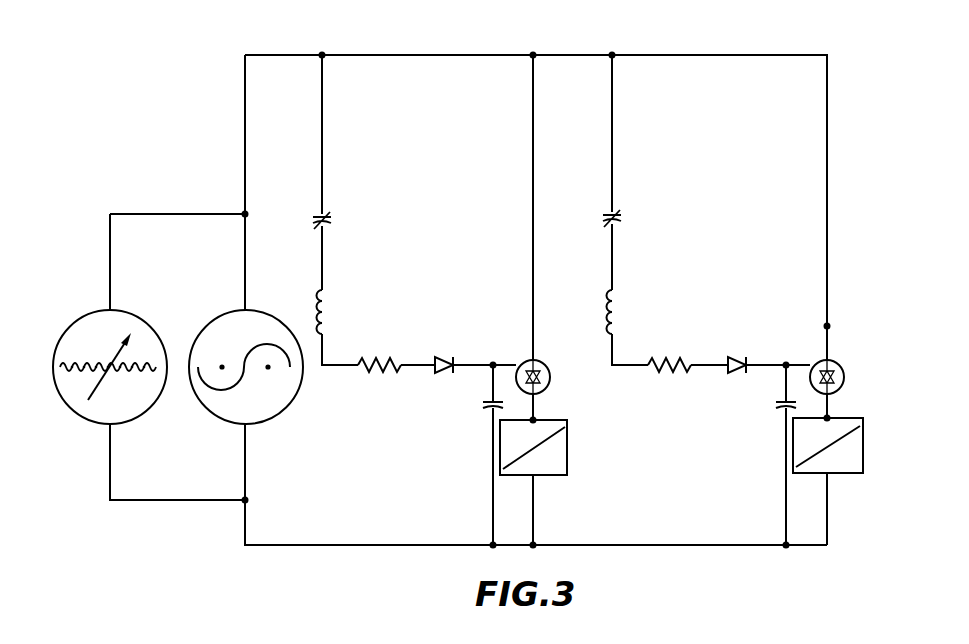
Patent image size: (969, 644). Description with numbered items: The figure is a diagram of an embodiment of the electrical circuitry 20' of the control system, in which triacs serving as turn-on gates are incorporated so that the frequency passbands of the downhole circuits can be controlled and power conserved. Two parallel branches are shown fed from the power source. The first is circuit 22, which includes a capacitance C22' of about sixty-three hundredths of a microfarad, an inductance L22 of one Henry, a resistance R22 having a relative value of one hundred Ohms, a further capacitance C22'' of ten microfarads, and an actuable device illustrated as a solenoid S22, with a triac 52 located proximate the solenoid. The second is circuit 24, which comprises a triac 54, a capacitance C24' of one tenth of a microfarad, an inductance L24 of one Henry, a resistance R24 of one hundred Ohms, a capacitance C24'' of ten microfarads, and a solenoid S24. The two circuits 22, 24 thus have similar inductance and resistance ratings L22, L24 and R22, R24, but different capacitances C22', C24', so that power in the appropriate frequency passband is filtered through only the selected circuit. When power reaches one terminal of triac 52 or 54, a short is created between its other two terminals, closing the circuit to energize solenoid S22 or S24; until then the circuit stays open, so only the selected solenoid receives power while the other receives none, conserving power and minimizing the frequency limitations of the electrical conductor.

The electrical circuitry 20' is at (581, 23).
The circuit 22 is at (338, 170).
The circuit 24 is at (630, 160).
The capacitance C22' is at (354, 222).
The inductance L22 is at (345, 312).
The resistance R22 is at (384, 354).
The capacitance C22'' is at (464, 455).
The triac 52 is at (550, 380).
The solenoid S22 is at (561, 483).
The capacitance C24' is at (644, 222).
The inductance L24 is at (639, 312).
The resistance R24 is at (673, 353).
The capacitance C24'' is at (757, 455).
The triac 54 is at (815, 362).
The solenoid S24 is at (836, 457).